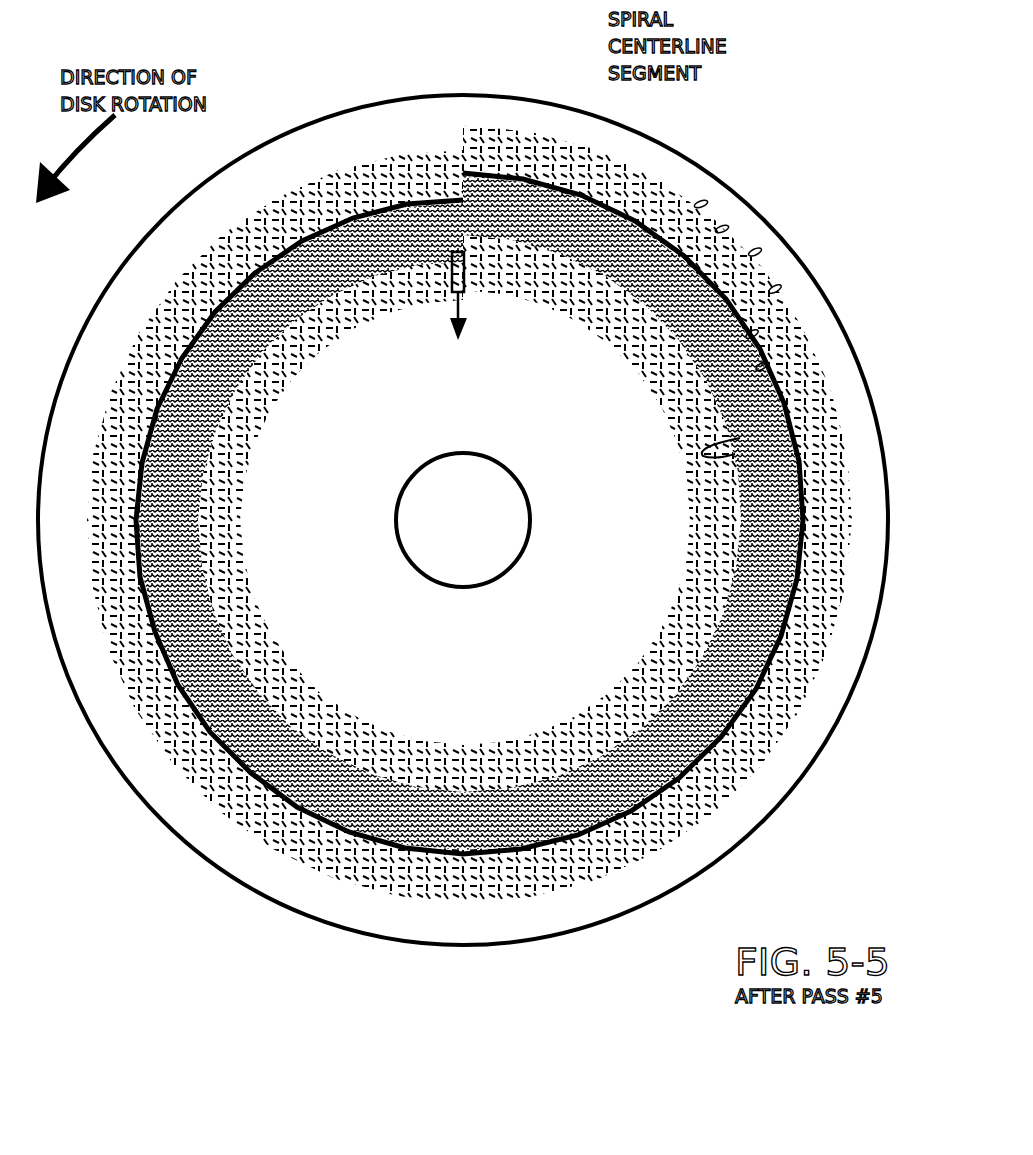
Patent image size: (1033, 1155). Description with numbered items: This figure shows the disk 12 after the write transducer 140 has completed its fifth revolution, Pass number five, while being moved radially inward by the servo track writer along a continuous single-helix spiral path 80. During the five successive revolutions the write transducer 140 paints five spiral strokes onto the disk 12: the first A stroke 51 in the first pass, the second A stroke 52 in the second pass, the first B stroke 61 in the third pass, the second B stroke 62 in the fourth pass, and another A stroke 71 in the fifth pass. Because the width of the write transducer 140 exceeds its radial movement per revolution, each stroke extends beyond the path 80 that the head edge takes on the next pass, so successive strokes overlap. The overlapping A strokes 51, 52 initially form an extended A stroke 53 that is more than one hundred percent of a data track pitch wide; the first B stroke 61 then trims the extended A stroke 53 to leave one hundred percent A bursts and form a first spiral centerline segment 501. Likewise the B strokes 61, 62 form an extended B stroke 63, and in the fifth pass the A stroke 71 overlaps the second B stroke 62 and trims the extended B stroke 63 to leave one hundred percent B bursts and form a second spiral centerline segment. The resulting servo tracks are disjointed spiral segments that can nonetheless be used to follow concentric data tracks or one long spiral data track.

The disk 12 is at (826, 745).
The single-helix spiral path 80 is at (490, 126).
The write transducer 140 is at (452, 265).
The spiral centerline segment 501 is at (560, 186).
The first A stroke 51 is at (698, 206).
The second A stroke 52 is at (720, 229).
The extended A stroke 53 is at (753, 252).
The first B stroke 61 is at (773, 288).
The second B stroke 62 is at (750, 333).
The extended B stroke 63 is at (760, 365).
The A stroke of fifth pass 71 is at (790, 413).